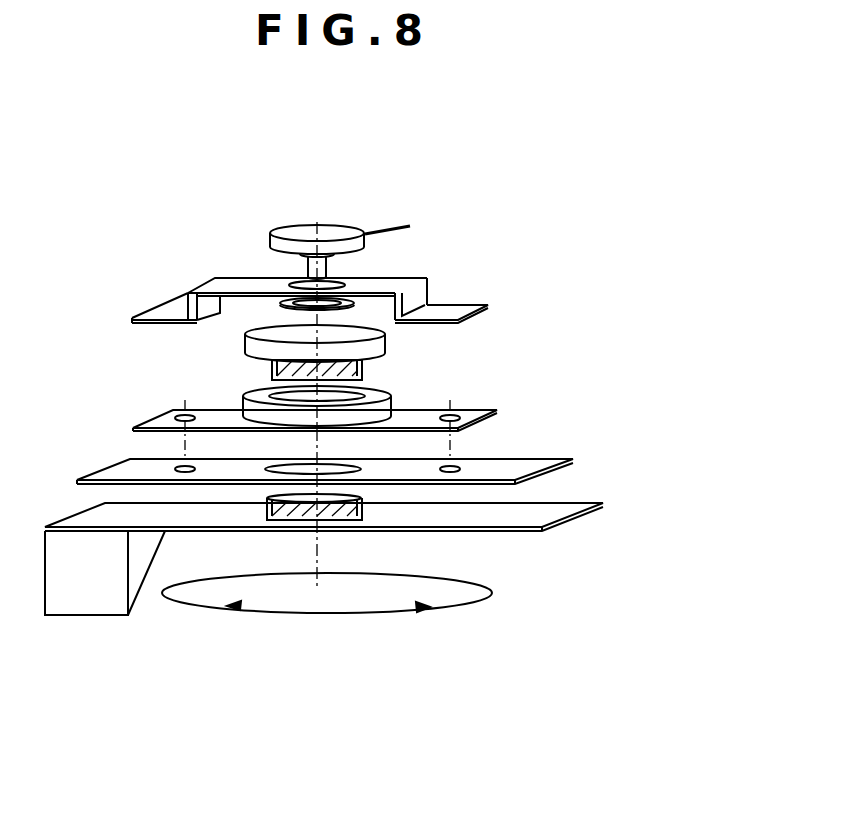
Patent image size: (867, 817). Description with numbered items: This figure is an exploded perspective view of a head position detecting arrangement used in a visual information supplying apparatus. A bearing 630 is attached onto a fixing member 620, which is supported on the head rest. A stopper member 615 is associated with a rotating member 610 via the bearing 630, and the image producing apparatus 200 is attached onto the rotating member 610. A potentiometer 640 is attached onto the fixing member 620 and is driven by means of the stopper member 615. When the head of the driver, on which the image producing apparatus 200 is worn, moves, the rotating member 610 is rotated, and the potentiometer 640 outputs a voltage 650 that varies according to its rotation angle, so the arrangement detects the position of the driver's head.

The potentiometer 640 is at (270, 240).
The voltage 650 is at (383, 230).
The stopper member 615 is at (245, 340).
The bearing 630 is at (392, 398).
The fixing member 620 is at (573, 462).
The rotating member 610 is at (573, 520).
The image producing apparatus 200 is at (92, 617).